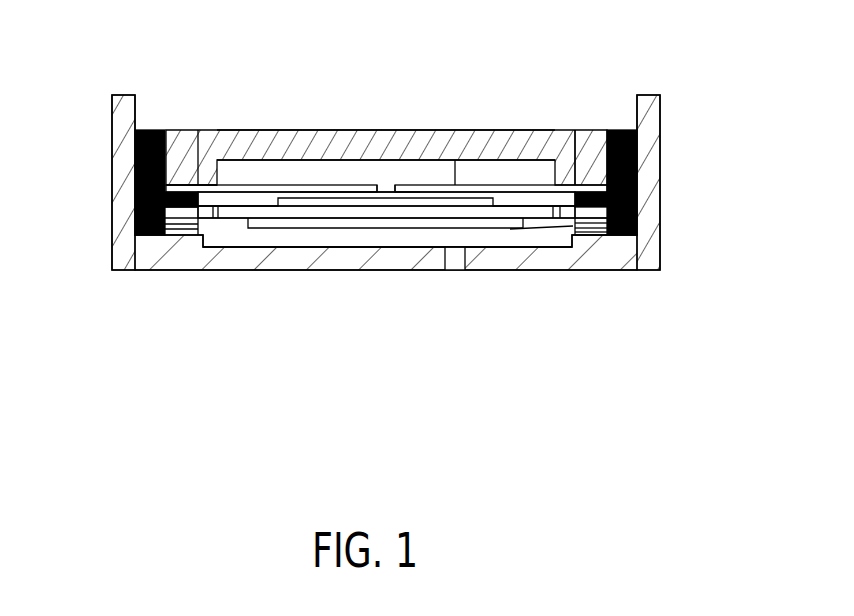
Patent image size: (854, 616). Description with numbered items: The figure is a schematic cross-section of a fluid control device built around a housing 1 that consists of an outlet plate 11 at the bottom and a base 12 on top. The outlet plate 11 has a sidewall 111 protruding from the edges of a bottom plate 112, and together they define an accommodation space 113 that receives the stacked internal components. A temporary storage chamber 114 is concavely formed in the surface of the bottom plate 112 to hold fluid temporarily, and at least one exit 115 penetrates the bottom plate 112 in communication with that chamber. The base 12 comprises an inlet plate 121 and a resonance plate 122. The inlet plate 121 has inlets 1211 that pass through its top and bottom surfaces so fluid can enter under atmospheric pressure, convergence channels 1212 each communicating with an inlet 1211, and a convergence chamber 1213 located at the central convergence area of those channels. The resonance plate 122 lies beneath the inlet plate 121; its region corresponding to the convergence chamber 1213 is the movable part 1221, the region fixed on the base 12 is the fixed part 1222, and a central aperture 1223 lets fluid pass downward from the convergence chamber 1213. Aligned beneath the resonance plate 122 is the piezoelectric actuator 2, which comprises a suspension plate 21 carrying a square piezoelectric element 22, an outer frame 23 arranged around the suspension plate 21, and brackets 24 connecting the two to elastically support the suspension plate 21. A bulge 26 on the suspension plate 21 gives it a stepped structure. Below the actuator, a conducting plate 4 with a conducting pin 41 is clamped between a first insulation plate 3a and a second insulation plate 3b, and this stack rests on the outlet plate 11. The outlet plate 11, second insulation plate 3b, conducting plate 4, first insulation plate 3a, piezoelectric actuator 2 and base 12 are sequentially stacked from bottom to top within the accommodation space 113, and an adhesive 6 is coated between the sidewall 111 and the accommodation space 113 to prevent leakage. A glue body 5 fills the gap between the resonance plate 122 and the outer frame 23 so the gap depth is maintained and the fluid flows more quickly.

The housing 1 is at (378, 189).
The outlet plate 11 is at (378, 221).
The sidewall 111 is at (117, 160).
The bottom plate 112 is at (338, 260).
The accommodation space 113 is at (593, 118).
The temporary storage chamber 114 is at (257, 233).
The exit 115 is at (455, 267).
The base 12 is at (383, 161).
The inlet plate 121 is at (388, 109).
The inlet 1211 is at (207, 138).
The convergence channel 1212 is at (262, 176).
The convergence chamber 1213 is at (373, 172).
The resonance plate 122 is at (376, 183).
The movable part 1221 is at (355, 190).
The fixed part 1222 is at (181, 183).
The central aperture 1223 is at (389, 197).
The piezoelectric actuator 2 is at (428, 281).
The suspension plate 21 is at (402, 213).
The piezoelectric element 22 is at (452, 220).
The outer frame 23 is at (583, 221).
The bracket 24 is at (579, 218).
The bulge 26 is at (468, 207).
The first insulation plate 3a is at (600, 236).
The second insulation plate 3b is at (588, 228).
The conducting plate 4 is at (573, 298).
The conducting pin 41 is at (533, 226).
The glue body 5 is at (570, 182).
The adhesive 6 is at (638, 152).